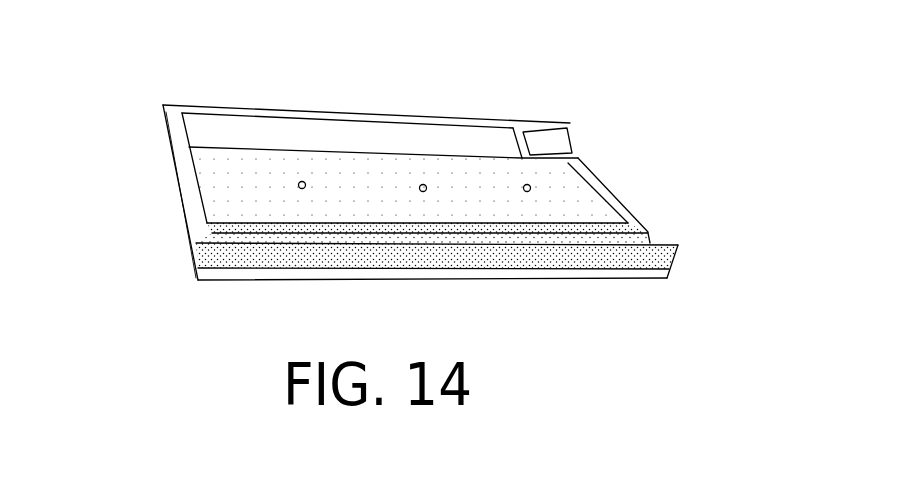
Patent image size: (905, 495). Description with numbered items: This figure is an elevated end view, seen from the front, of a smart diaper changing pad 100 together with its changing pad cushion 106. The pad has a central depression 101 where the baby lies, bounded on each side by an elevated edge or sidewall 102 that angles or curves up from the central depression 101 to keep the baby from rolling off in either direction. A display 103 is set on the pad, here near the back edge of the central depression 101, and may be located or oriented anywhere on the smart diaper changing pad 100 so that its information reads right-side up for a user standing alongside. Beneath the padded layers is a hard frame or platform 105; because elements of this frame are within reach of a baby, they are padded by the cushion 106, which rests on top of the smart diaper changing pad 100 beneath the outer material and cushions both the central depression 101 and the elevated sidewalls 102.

The smart diaper changing pad 100 is at (393, 113).
The central depression 101 is at (183, 185).
The elevated edges or sidewalls 102 is at (175, 130).
The display 103 is at (552, 137).
The hard frame or platform 105 is at (170, 168).
The changing pad cushion 106 is at (234, 163).